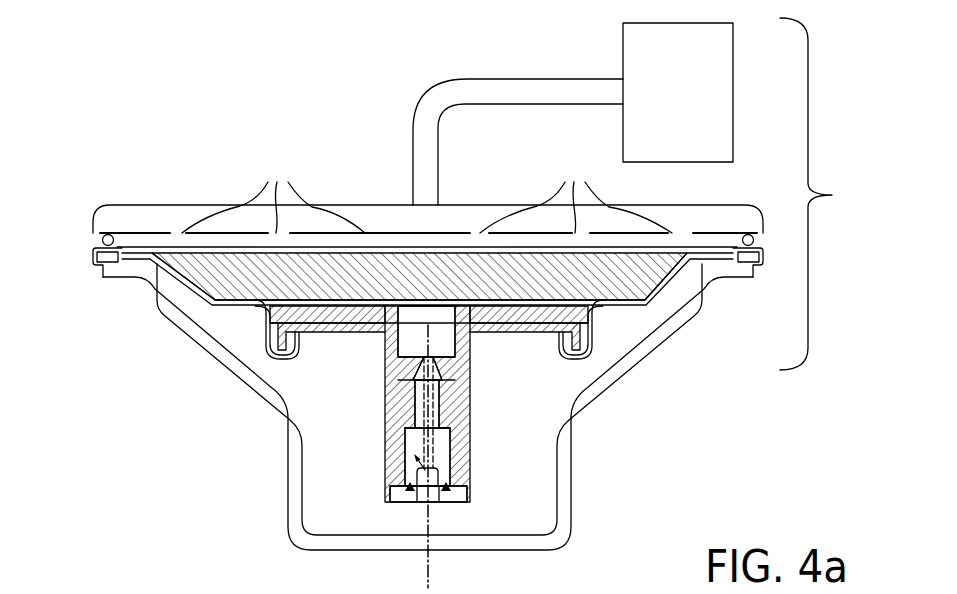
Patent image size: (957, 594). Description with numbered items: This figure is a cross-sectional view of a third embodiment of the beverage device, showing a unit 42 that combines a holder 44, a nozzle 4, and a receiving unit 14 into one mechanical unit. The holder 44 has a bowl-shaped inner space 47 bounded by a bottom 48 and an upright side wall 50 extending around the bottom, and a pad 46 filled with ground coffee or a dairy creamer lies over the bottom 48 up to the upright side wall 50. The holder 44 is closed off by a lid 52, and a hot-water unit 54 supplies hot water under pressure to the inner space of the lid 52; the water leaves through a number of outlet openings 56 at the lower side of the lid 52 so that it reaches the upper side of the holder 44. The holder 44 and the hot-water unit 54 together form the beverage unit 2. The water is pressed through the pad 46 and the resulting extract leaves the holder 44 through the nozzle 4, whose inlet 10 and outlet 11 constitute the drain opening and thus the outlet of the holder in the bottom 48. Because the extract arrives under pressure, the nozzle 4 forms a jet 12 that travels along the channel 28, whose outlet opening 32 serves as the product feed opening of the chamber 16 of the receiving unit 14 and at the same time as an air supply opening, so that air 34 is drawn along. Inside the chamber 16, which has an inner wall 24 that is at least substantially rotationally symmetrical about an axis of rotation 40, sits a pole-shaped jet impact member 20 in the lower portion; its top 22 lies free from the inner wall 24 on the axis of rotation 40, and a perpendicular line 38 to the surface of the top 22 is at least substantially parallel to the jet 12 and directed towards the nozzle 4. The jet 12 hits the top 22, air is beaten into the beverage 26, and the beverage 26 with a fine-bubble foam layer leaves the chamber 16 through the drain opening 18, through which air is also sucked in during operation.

The beverage unit 2 is at (817, 194).
The nozzle 4 is at (471, 357).
The inlet 10 is at (430, 362).
The outlet 11 is at (446, 390).
The jet 12 is at (418, 418).
The receiving unit 14 is at (536, 408).
The chamber 16 is at (404, 460).
The drain opening 18 is at (418, 500).
The jet impact member 20 is at (471, 487).
The top 22 is at (440, 500).
The inner wall 24 is at (405, 438).
The beverage 26 is at (408, 482).
The channel 28 is at (447, 420).
The outlet opening 32 is at (449, 440).
The air 34 is at (392, 500).
The perpendicular line 38 is at (429, 568).
The axis of rotation 40 is at (466, 457).
The unit 42 is at (644, 422).
The holder 44 is at (697, 311).
The pad 46 is at (403, 262).
The bowl-shaped inner space 47 is at (680, 273).
The bottom 48 is at (236, 306).
The upright side wall 50 is at (103, 269).
The lid 52 is at (721, 205).
The hot-water unit 54 is at (622, 53).
The outlet openings 56 is at (427, 196).